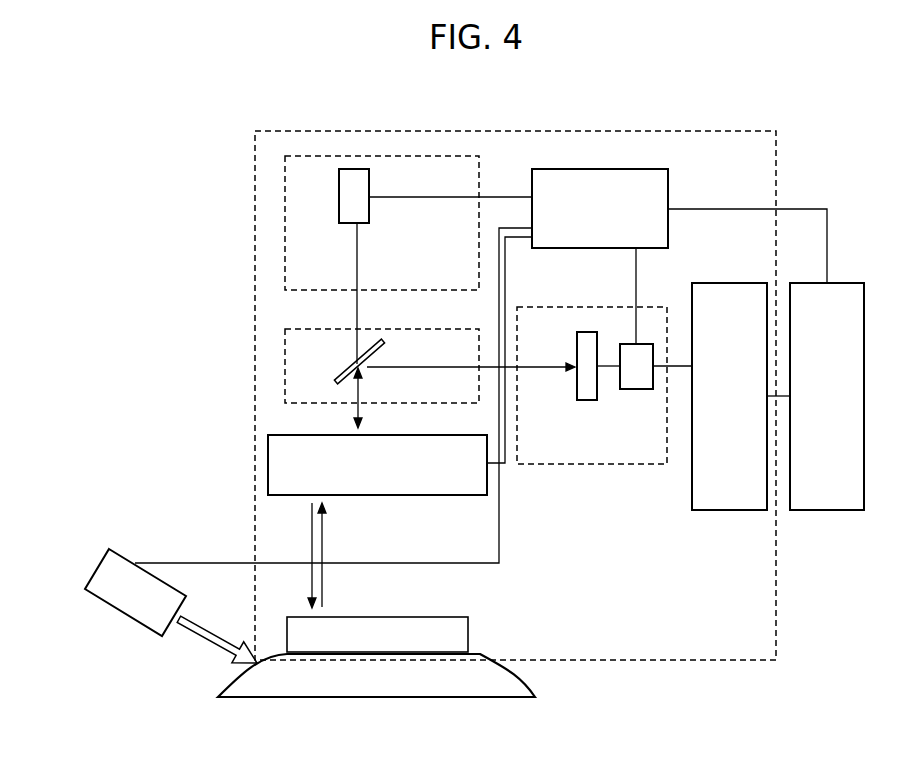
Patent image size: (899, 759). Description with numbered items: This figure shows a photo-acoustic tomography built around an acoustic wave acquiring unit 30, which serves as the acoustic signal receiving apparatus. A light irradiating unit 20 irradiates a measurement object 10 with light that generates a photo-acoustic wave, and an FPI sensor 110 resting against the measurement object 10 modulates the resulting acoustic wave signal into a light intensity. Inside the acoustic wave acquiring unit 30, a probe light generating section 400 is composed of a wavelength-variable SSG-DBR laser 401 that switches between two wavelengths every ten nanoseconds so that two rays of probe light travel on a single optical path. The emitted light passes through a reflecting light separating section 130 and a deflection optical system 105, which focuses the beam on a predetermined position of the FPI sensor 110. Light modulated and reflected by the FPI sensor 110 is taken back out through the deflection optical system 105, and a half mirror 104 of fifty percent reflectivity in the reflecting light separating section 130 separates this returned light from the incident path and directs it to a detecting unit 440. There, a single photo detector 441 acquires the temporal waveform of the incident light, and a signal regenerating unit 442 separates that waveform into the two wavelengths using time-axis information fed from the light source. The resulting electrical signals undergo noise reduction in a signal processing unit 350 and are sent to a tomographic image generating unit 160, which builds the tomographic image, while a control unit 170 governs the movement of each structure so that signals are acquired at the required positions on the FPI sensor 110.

The acoustic wave acquiring unit 30 is at (290, 131).
The probe light generating section 400 is at (318, 156).
The wavelength-variable SSG-DBR laser 401 is at (339, 178).
The control unit 170 is at (668, 181).
The signal processing unit 350 is at (746, 283).
The tomographic image generating unit 160 is at (846, 283).
The detecting unit 440 is at (550, 307).
The photo detector 441 is at (580, 400).
The signal regenerating unit 442 is at (637, 385).
The reflecting light separating section 130 is at (322, 329).
The half mirror 104 is at (412, 326).
The deflection optical system 105 is at (322, 435).
The FPI sensor 110 is at (461, 635).
The measurement object 10 is at (508, 683).
The light irradiating unit 20 is at (105, 593).